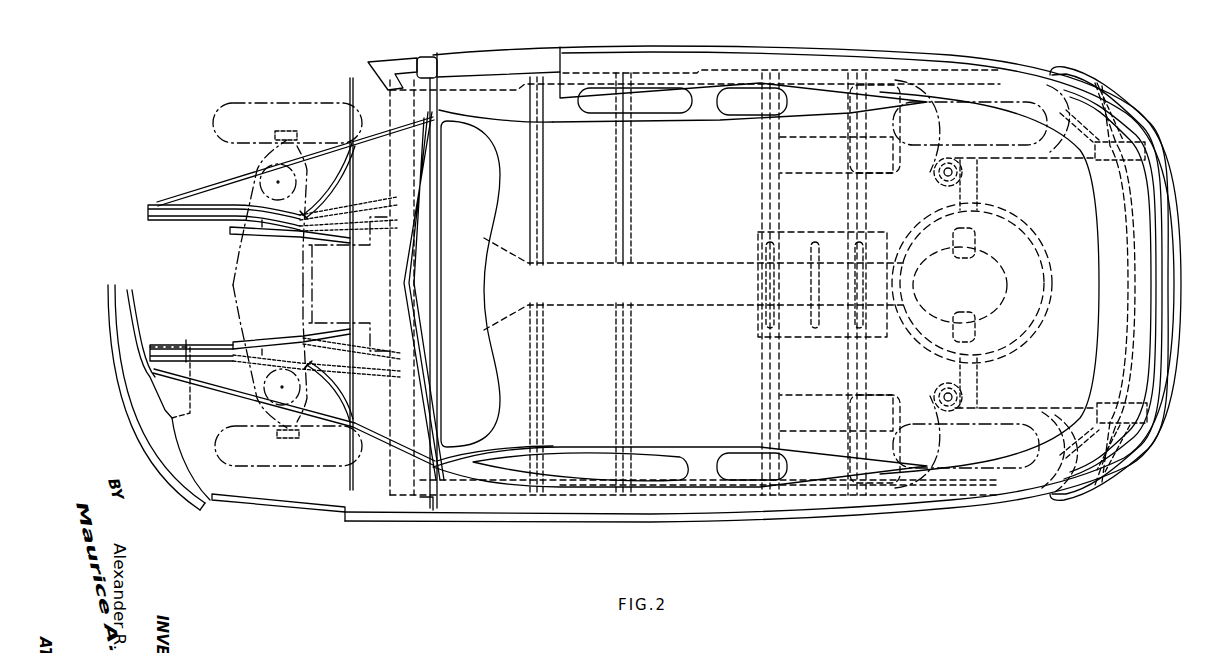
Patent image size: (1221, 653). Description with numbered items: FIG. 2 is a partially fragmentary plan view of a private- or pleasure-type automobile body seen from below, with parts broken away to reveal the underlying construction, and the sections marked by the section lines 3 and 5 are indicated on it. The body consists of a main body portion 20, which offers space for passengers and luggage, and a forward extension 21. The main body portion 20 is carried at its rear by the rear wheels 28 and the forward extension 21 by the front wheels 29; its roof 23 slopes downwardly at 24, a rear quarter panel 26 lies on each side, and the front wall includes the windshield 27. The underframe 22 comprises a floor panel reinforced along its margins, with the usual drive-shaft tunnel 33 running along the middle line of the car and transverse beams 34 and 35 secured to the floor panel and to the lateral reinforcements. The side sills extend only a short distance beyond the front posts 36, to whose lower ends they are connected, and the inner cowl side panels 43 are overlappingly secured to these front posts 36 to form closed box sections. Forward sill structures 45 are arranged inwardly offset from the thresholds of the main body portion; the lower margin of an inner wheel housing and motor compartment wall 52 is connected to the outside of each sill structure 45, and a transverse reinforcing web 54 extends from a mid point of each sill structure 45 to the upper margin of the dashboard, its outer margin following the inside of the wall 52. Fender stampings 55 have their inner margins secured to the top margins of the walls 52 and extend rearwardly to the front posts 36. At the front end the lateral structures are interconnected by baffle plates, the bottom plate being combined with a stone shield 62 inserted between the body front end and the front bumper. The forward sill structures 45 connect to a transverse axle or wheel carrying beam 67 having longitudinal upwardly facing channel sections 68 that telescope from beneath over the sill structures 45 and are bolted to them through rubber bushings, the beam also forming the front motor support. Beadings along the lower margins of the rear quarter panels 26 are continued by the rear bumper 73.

The section line 3- 3 is at (308, 100).
The section line 5- 5 is at (348, 285).
The main body portion 20 is at (710, 524).
The forward extension 21 is at (222, 512).
The underframe 22 is at (472, 100).
The roof 23 is at (696, 180).
The downwardly sloping roof portion 24 is at (1085, 309).
The rear quarter panel 26 is at (963, 468).
The windshield 27 is at (480, 412).
The rear wheels 28 is at (1026, 468).
The front wheels 29 is at (228, 103).
The tunnel 33 is at (670, 264).
The transverse beam 34 is at (352, 143).
The transverse beam 35 is at (855, 196).
The front post 36 is at (425, 57).
The inner cowl side panel 43 is at (372, 78).
The forward sill structure 45 is at (164, 212).
The inner wheel housing and motor compartment wall 52 is at (205, 200).
The transverse reinforcing web 54 is at (337, 230).
The fender stamping 55 is at (300, 493).
The stone shield 62 is at (138, 439).
The transverse axle or wheel carrying beam 67 is at (243, 262).
The upwardly facing channel section 68 is at (232, 235).
The rear bumper 73 is at (1166, 176).